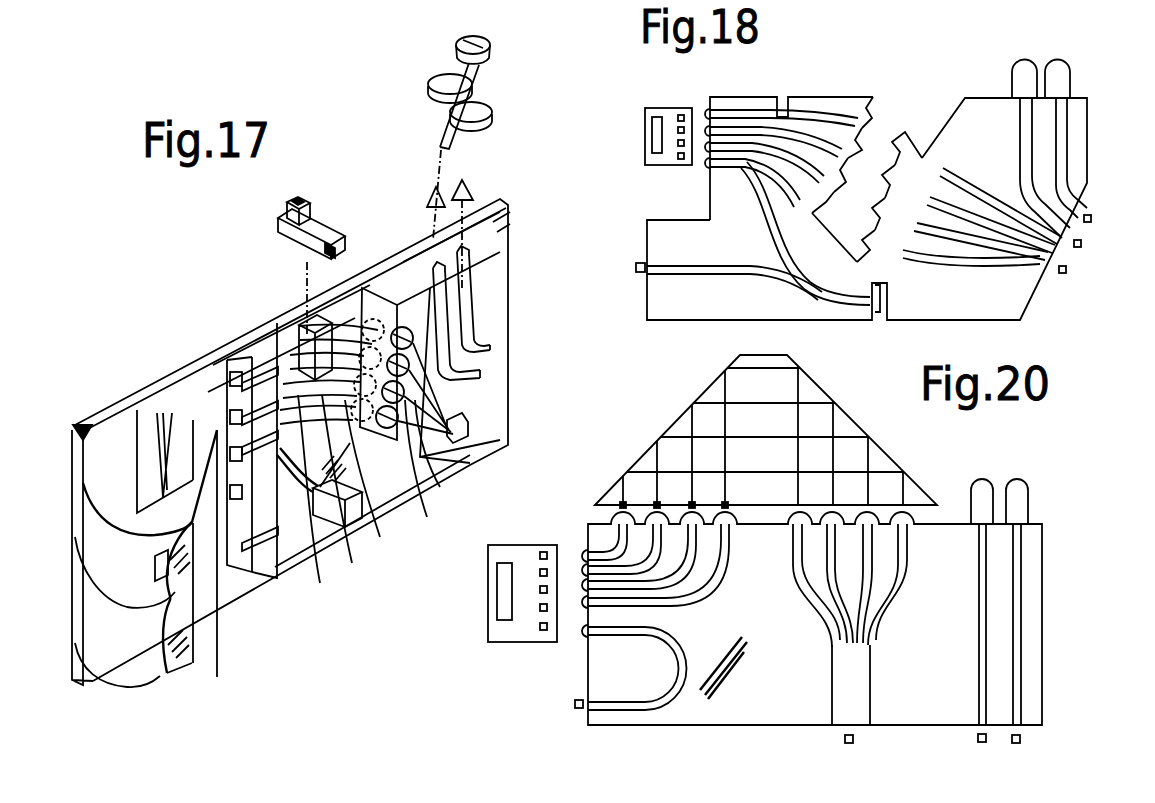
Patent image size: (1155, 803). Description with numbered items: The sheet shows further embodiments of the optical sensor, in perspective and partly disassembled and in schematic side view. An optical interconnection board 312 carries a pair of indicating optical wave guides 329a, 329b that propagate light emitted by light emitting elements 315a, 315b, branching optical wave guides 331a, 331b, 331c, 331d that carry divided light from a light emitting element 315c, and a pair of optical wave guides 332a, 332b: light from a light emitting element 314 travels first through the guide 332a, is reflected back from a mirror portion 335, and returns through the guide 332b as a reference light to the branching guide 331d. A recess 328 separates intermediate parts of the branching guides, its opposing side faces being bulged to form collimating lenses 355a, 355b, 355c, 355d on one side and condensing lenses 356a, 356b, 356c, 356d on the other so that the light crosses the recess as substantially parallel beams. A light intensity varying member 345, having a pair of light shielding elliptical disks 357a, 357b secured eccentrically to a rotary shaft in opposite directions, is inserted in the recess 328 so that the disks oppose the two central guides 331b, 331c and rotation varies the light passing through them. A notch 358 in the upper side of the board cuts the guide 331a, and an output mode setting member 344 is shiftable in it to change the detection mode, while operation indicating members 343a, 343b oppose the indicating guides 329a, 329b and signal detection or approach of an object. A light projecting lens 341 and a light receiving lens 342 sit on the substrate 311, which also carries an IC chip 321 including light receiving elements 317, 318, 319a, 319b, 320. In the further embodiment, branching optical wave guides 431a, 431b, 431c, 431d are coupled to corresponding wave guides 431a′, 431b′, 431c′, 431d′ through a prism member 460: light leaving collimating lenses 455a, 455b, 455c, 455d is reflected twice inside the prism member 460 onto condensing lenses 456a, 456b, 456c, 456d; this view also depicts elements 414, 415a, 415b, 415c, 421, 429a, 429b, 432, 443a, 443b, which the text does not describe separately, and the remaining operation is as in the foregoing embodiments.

In FIG. 17, the substrate 311 is at (510, 207).
In FIG. 17, the optical interconnection board 312 is at (472, 463).
In FIG. 18, the optical interconnection board 312 is at (1015, 307).
In FIG. 17, the light emitting element 314 is at (155, 573).
In FIG. 18, the light emitting element 314 is at (637, 266).
In FIG. 18, the light emitting element 315a is at (1091, 219).
In FIG. 18, the light emitting element 315b is at (1082, 244).
In FIG. 18, the light emitting element 315c is at (1067, 270).
In FIG. 17, the light receiving element 317 is at (138, 413).
In FIG. 17, the light receiving element 318 is at (229, 358).
In FIG. 17, the light receiving element 319a is at (215, 366).
In FIG. 17, the light receiving element 319b is at (208, 390).
In FIG. 17, the light receiving element 320 is at (240, 588).
In FIG. 17, the IC chip 321 is at (170, 412).
In FIG. 18, the IC chip 321 is at (676, 106).
In FIG. 17, the recess 328 is at (395, 292).
In FIG. 18, the recess 328 is at (938, 110).
In FIG. 17, the indicating optical wave guide 329a is at (472, 281).
In FIG. 18, the indicating optical wave guide 329a is at (1063, 138).
In FIG. 17, the indicating optical wave guide 329b is at (452, 308).
In FIG. 18, the indicating optical wave guide 329b is at (1030, 170).
In FIG. 17, the branching optical wave guide 331a is at (288, 375).
In FIG. 18, the branching optical wave guide 331a is at (823, 117).
In FIG. 17, the branching optical wave guide 331b is at (478, 412).
In FIG. 18, the branching optical wave guide 331b is at (794, 122).
In FIG. 17, the branching optical wave guide 331c is at (386, 486).
In FIG. 18, the branching optical wave guide 331c is at (767, 148).
In FIG. 17, the branching optical wave guide 331d is at (378, 483).
In FIG. 18, the branching optical wave guide 331d is at (778, 185).
In FIG. 18, the optical wave guide 332a is at (753, 283).
In FIG. 18, the optical wave guide 332b is at (772, 237).
In FIG. 18, the mirror portion 335 is at (882, 317).
In FIG. 17, the light projecting lens 341 is at (155, 673).
In FIG. 17, the light receiving lens 342 is at (80, 426).
In FIG. 17, the operation indicating member 343a is at (474, 190).
In FIG. 18, the operation indicating member 343a is at (1067, 63).
In FIG. 17, the operation indicating member 343b is at (445, 185).
In FIG. 18, the operation indicating member 343b is at (1023, 58).
In FIG. 17, the output mode setting member 344 is at (318, 212).
In FIG. 17, the light intensity varying member 345 is at (482, 74).
In FIG. 18, the collimating lens 355a is at (923, 148).
In FIG. 18, the collimating lens 355b is at (942, 168).
In FIG. 18, the collimating lens 355c is at (912, 197).
In FIG. 18, the collimating lens 355d is at (873, 252).
In FIG. 18, the condensing lens 356a is at (870, 106).
In FIG. 18, the condensing lens 356b is at (855, 152).
In FIG. 18, the condensing lens 356c is at (840, 180).
In FIG. 18, the condensing lens 356d is at (818, 213).
In FIG. 17, the light shielding elliptical disk 357a is at (430, 85).
In FIG. 17, the light shielding elliptical disk 357b is at (495, 112).
In FIG. 17, the notch 358 is at (291, 337).
In FIG. 18, the notch 358 is at (780, 97).
In FIG. 20, the connection pad 414 is at (575, 704).
In FIG. 20, the contact pad 415a is at (1022, 739).
In FIG. 20, the contact pad 415b is at (987, 735).
In FIG. 20, the contact pad 415c is at (845, 739).
In FIG. 20, the sensor socket 421 is at (513, 645).
In FIG. 20, the lead conductor 429a is at (1020, 590).
In FIG. 20, the lead conductor 429b is at (982, 632).
In FIG. 20, the branching optical wave guide 431a is at (898, 577).
In FIG. 20, the branching optical wave guide 431b is at (862, 600).
In FIG. 20, the branching optical wave guide 431c is at (835, 613).
In FIG. 20, the branching optical wave guide 431d is at (833, 603).
In FIG. 20, the corresponding branching wave guide 431a′ is at (614, 522).
In FIG. 20, the corresponding branching wave guide 431b′ is at (633, 577).
In FIG. 20, the corresponding branching wave guide 431c′ is at (687, 573).
In FIG. 20, the corresponding branching wave guide 431d′ is at (723, 555).
In FIG. 20, the conductor loop 432 is at (652, 650).
In FIG. 20, the pin 443a is at (1028, 483).
In FIG. 20, the pin 443b is at (985, 474).
In FIG. 20, the collimating lens 455a is at (912, 522).
In FIG. 20, the collimating lens 455b is at (870, 514).
In FIG. 20, the collimating lens 455c is at (835, 514).
In FIG. 20, the collimating lens 455d is at (800, 514).
In FIG. 20, the condensing lens 456a is at (623, 514).
In FIG. 20, the condensing lens 456b is at (657, 514).
In FIG. 20, the condensing lens 456c is at (692, 514).
In FIG. 20, the condensing lens 456d is at (725, 514).
In FIG. 20, the prism member 460 is at (812, 393).